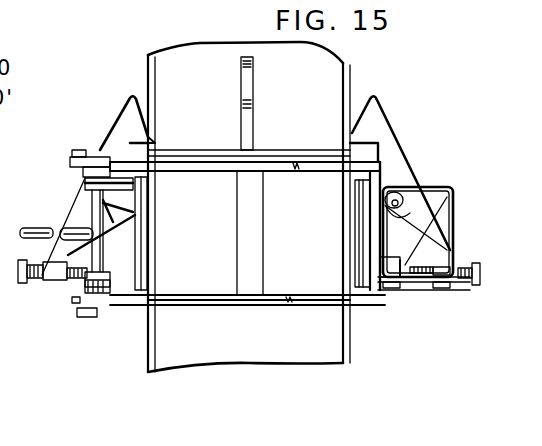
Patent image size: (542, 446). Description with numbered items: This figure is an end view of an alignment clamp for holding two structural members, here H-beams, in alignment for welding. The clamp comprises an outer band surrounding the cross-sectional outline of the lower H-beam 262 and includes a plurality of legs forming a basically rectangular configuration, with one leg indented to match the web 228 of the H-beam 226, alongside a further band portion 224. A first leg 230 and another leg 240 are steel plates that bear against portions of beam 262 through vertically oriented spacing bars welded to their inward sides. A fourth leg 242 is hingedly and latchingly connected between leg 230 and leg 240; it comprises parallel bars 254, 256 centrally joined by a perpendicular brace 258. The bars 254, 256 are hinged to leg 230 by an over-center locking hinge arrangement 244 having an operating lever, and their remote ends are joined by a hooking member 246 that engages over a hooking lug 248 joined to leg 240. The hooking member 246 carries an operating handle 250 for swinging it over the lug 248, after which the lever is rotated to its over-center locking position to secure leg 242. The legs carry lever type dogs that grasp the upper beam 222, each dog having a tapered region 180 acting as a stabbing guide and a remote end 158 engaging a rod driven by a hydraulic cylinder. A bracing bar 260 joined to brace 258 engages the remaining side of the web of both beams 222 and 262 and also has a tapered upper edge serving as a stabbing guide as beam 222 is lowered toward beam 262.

The beam 222 is at (218, 40).
The left pipe wall 224 is at (147, 357).
The H-beam 226 is at (353, 362).
The web 228 is at (295, 350).
The fourth leg 242 is at (252, 316).
The bracing bar 260 is at (243, 103).
The parallel bar 254 is at (212, 163).
The parallel bar 256 is at (195, 297).
The perpendicular brace 258 is at (245, 228).
The tapered region 180 is at (148, 133).
The over-center locking hinge arrangement 244 is at (67, 150).
The first leg 230 is at (140, 230).
The remote end 158 is at (63, 292).
The H-beam 262 is at (141, 331).
The hooking lug 248 is at (367, 227).
The hooking member 246 is at (375, 305).
The leg 240 is at (362, 273).
The operating handle 250 is at (422, 282).